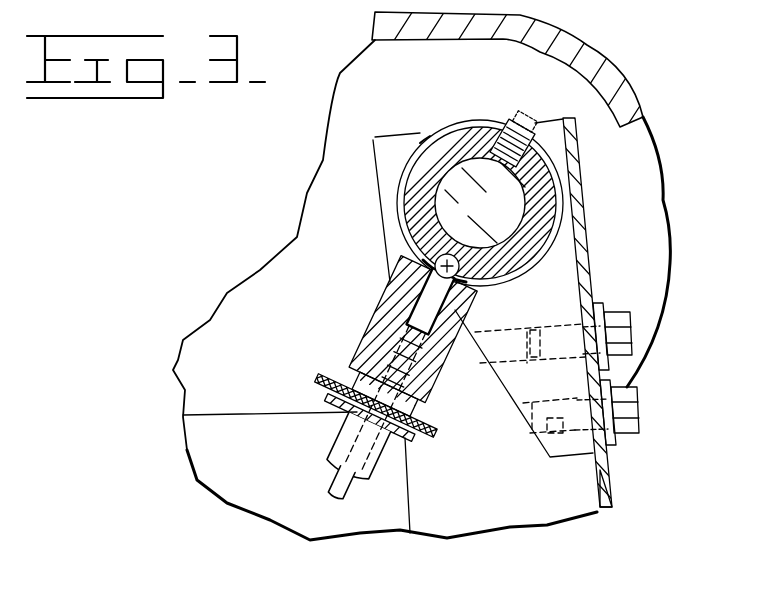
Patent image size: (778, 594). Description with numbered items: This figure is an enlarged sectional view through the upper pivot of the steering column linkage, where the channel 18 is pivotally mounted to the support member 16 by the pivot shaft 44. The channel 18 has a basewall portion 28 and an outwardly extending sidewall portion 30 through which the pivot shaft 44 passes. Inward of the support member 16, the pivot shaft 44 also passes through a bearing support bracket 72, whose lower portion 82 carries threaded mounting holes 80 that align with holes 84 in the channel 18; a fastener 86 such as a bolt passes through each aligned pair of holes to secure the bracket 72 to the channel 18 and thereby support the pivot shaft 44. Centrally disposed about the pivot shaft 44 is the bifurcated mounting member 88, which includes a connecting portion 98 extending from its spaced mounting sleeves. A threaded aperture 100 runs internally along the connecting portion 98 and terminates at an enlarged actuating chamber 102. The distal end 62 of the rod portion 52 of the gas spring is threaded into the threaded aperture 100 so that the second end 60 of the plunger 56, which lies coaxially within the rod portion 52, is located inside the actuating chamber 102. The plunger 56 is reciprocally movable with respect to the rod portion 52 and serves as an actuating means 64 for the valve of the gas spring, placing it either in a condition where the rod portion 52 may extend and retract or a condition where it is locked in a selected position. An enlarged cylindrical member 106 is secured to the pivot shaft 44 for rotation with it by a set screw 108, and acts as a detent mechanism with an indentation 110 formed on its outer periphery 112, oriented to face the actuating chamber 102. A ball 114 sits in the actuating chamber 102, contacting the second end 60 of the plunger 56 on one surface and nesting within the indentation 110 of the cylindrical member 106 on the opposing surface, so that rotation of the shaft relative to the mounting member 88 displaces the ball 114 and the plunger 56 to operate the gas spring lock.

The support member 16 is at (575, 53).
The channel 18 is at (452, 492).
The basewall portion 28 is at (606, 492).
The sidewall portion 30 is at (520, 508).
The pivot shaft 44 is at (466, 216).
The rod portion 52 is at (350, 425).
The plunger 56 is at (398, 296).
The second end of the plunger 60 is at (530, 353).
The distal end of the rod portion 62 is at (436, 376).
The actuating means 64 is at (527, 281).
The bearing support bracket 72 is at (517, 378).
The threaded mounting hole 80 is at (530, 435).
The lower portion 82 is at (608, 284).
The hole 84 is at (572, 374).
The fastener 86 is at (620, 428).
The bifurcated mounting member 88 is at (368, 247).
The connecting portion 98 is at (385, 328).
The threaded aperture 100 is at (385, 345).
The actuating chamber 102 is at (474, 308).
The cylindrical member 106 is at (475, 128).
The set screw 108 is at (519, 122).
The indentation 110 is at (433, 267).
The outer periphery 112 is at (420, 143).
The ball 114 is at (500, 288).